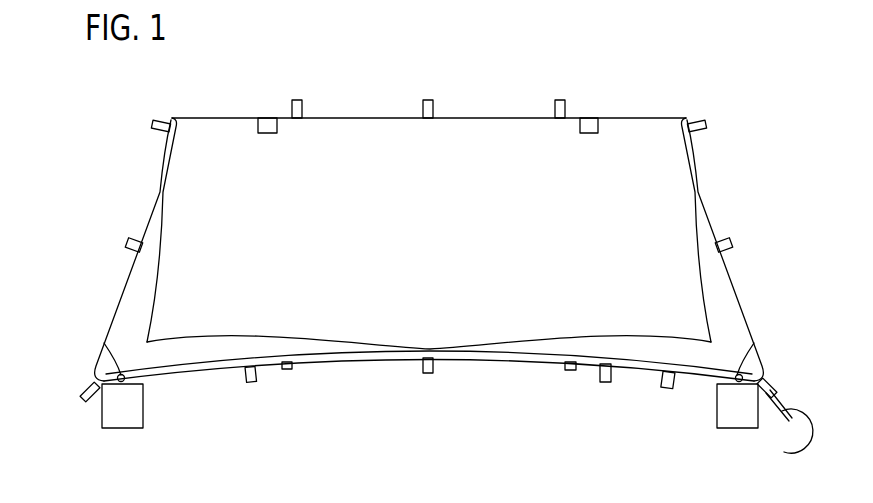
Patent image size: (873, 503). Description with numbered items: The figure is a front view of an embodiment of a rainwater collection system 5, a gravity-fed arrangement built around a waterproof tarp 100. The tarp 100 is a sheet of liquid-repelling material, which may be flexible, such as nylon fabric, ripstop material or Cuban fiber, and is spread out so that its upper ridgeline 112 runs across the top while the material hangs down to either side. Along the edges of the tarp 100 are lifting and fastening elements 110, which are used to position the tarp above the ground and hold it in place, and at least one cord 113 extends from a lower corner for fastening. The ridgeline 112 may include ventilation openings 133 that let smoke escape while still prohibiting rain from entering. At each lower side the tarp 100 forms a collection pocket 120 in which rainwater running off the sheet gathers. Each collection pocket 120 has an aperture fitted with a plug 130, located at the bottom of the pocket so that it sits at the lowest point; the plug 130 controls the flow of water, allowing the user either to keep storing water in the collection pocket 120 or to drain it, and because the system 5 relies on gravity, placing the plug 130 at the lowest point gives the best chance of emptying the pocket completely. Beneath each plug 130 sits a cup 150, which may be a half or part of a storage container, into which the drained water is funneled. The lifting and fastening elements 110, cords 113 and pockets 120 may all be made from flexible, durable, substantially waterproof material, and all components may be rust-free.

The rainwater collection system 5 is at (457, 88).
The tarp 100 is at (201, 118).
The lifting and fastening elements 110 is at (563, 100).
The ridgeline 112 is at (660, 117).
The cord 113 is at (786, 452).
The collection pocket 120 is at (132, 318).
The plug 130 is at (103, 346).
The ventilation openings 133 is at (266, 122).
The cups 150 is at (144, 410).